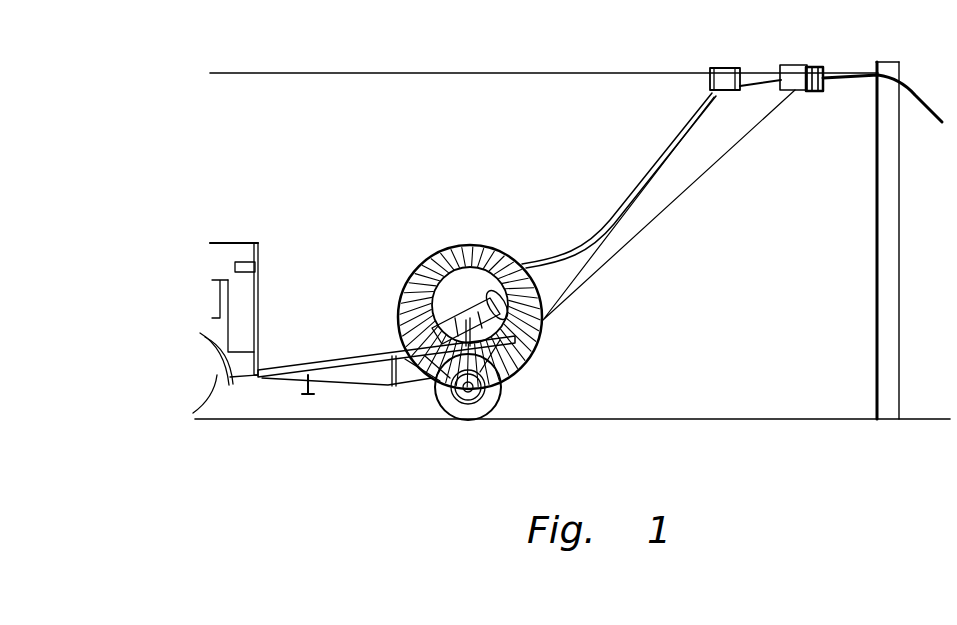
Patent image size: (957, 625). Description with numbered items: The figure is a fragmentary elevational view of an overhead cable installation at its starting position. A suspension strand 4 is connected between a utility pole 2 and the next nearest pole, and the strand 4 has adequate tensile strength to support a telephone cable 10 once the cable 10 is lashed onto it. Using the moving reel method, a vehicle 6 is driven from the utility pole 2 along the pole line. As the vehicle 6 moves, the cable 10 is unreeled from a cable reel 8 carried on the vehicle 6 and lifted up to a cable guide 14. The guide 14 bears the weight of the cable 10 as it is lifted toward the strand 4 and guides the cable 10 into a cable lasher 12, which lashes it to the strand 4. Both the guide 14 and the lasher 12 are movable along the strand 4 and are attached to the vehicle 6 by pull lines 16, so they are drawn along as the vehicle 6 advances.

The utility pole 2 is at (897, 346).
The suspension strand 4 is at (384, 73).
The vehicle 6 is at (243, 243).
The cable reel 8 is at (476, 246).
The telephone cable 10 is at (650, 176).
The cable lasher 12 is at (797, 63).
The cable guide 14 is at (720, 67).
The pull lines 16 is at (658, 202).